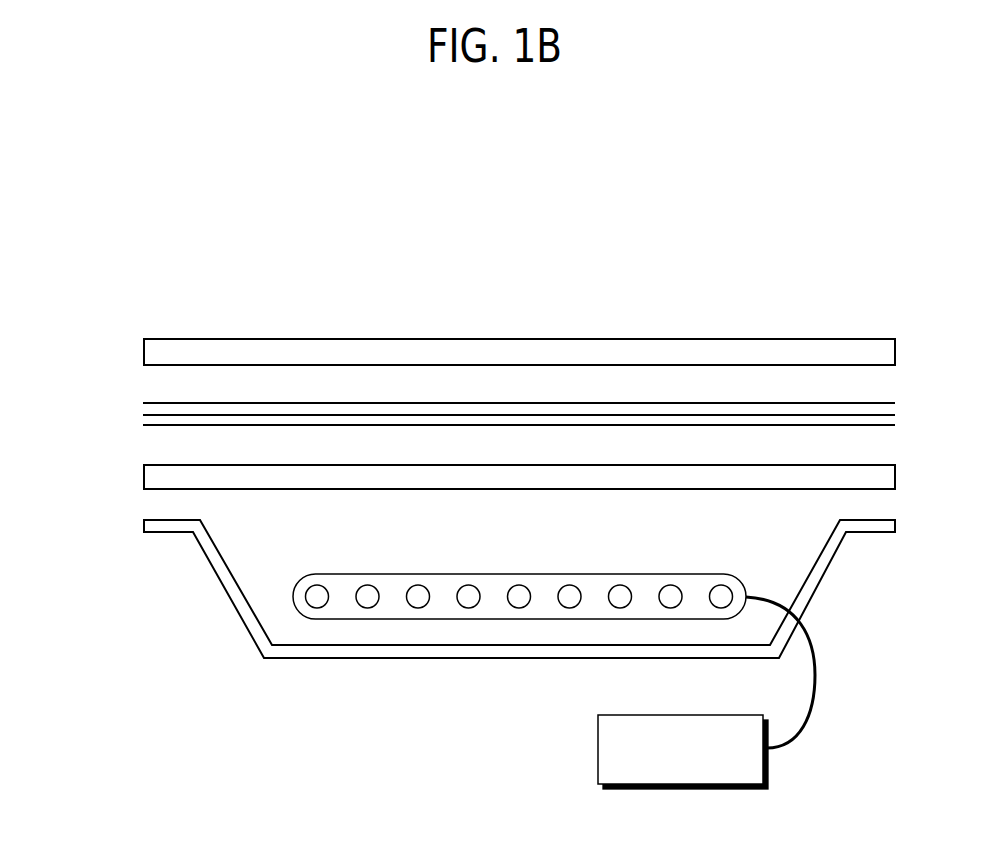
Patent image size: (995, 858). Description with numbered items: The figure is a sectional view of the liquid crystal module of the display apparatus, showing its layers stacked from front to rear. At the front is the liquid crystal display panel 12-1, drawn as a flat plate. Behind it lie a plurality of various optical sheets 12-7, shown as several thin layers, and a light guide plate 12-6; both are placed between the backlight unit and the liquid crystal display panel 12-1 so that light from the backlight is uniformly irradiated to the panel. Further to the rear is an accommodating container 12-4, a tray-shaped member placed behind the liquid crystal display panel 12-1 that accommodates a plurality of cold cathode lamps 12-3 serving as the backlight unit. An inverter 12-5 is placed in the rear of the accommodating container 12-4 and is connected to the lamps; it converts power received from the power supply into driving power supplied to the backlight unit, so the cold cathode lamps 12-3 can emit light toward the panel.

The liquid crystal display panel 12-1 is at (143, 353).
The optical sheets 12-7 is at (143, 403).
The light guide plate 12-6 is at (143, 478).
The accommodating container 12-4 is at (143, 530).
The cold cathode lamps 12-3 is at (420, 607).
The inverter 12-5 is at (685, 789).